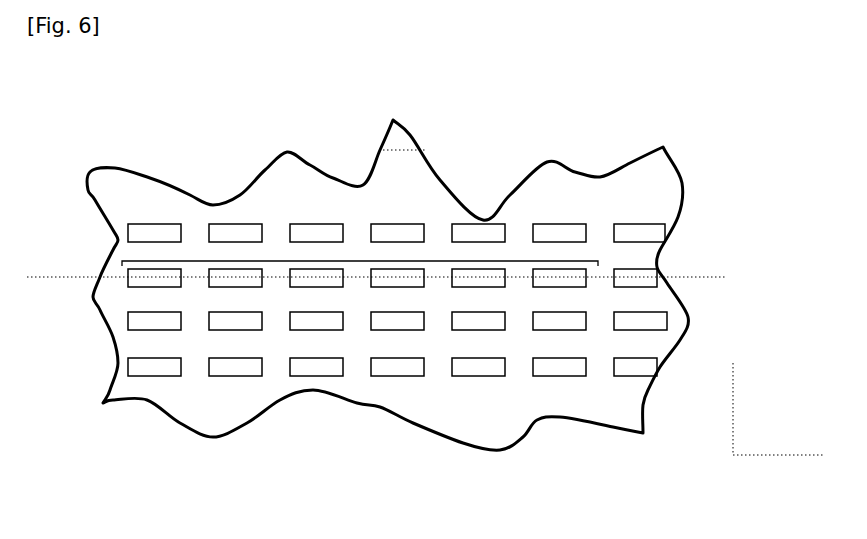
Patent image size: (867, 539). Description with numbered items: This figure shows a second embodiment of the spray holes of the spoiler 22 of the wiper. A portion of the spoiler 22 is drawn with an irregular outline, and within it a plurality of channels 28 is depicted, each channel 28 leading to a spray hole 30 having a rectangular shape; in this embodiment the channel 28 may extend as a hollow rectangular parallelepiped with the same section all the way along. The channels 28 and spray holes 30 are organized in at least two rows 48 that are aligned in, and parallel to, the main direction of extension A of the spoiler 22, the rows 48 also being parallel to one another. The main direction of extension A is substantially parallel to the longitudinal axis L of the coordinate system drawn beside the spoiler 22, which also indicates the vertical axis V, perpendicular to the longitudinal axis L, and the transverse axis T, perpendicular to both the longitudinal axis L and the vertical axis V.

The spoiler 22 is at (418, 185).
The rows 48 is at (357, 263).
The channels 28 is at (168, 282).
The spray holes 30 is at (418, 373).
The main direction of extension A is at (37, 277).
The vertical axis V is at (733, 416).
The transverse axis T is at (733, 455).
The longitudinal axis L is at (768, 455).